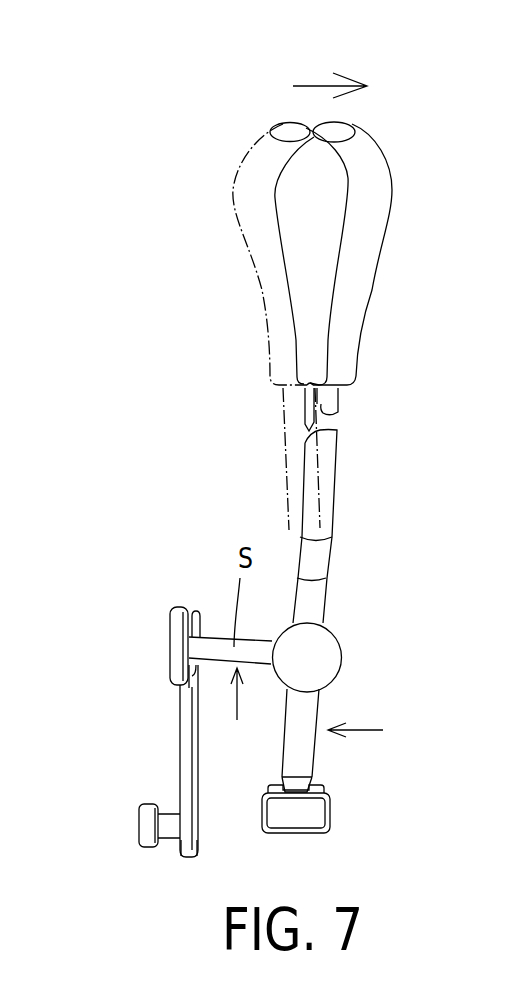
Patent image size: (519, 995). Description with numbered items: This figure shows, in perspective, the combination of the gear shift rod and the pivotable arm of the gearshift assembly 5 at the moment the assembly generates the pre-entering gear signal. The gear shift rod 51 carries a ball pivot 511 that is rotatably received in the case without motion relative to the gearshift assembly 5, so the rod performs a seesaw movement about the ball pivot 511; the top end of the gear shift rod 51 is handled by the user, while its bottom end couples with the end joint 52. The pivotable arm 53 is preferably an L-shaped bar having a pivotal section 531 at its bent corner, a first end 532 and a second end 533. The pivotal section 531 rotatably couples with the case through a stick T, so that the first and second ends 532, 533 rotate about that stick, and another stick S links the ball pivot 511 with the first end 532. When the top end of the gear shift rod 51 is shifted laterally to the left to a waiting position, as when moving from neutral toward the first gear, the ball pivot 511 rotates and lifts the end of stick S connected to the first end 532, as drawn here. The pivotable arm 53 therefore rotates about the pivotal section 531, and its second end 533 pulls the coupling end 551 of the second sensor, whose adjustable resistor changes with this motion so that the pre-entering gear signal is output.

The gearshift assembly 5 is at (312, 253).
The gear shift rod 51 is at (325, 565).
The ball pivot 511 is at (327, 655).
The end joint 52 is at (302, 817).
The pivotable arm 53 is at (183, 750).
The pivotal section 531 is at (200, 614).
The first end 532 is at (174, 660).
The second end 533 is at (183, 843).
The coupling end 551 is at (138, 820).